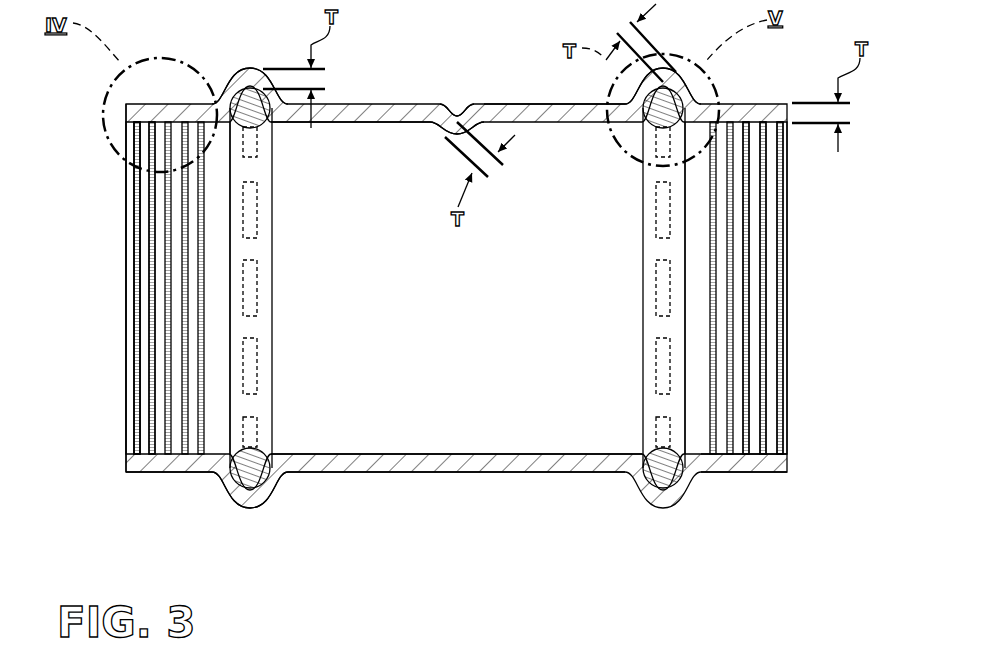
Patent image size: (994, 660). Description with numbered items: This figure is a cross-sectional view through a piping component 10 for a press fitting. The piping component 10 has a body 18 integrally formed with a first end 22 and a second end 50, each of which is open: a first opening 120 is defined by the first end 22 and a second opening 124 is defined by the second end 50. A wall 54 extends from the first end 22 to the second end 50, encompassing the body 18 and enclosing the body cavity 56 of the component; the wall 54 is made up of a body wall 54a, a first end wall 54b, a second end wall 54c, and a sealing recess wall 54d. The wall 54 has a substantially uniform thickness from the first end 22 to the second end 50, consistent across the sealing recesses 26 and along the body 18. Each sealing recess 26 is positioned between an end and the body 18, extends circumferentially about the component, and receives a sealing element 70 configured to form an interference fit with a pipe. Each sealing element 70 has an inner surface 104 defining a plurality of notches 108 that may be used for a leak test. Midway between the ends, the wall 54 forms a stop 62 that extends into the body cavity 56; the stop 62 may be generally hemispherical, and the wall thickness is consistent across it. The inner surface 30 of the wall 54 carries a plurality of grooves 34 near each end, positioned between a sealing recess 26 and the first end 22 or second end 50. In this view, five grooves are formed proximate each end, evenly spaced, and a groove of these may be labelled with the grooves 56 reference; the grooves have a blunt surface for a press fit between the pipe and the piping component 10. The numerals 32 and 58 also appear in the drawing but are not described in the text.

The piping component 10 is at (456, 287).
The body 18 is at (520, 112).
The first end 22 is at (135, 470).
The sealing recess 26 is at (245, 75).
The inner surface 30 is at (220, 421).
The fins 32 is at (143, 297).
The plurality of grooves 34 is at (143, 393).
The second end 50 is at (780, 465).
The wall 54 is at (353, 473).
The body wall 54a is at (490, 467).
The first end wall 54b is at (760, 467).
The second end wall 54c is at (172, 465).
The sealing recess wall 54d is at (243, 503).
The grooves 56 is at (150, 340).
The interior passage 58 is at (417, 395).
The stop 62 is at (452, 113).
The sealing element 70 is at (253, 473).
The inner surface of sealing element 104 is at (680, 401).
The notches 108 is at (643, 327).
The first opening 120 is at (117, 230).
The second opening 124 is at (798, 250).